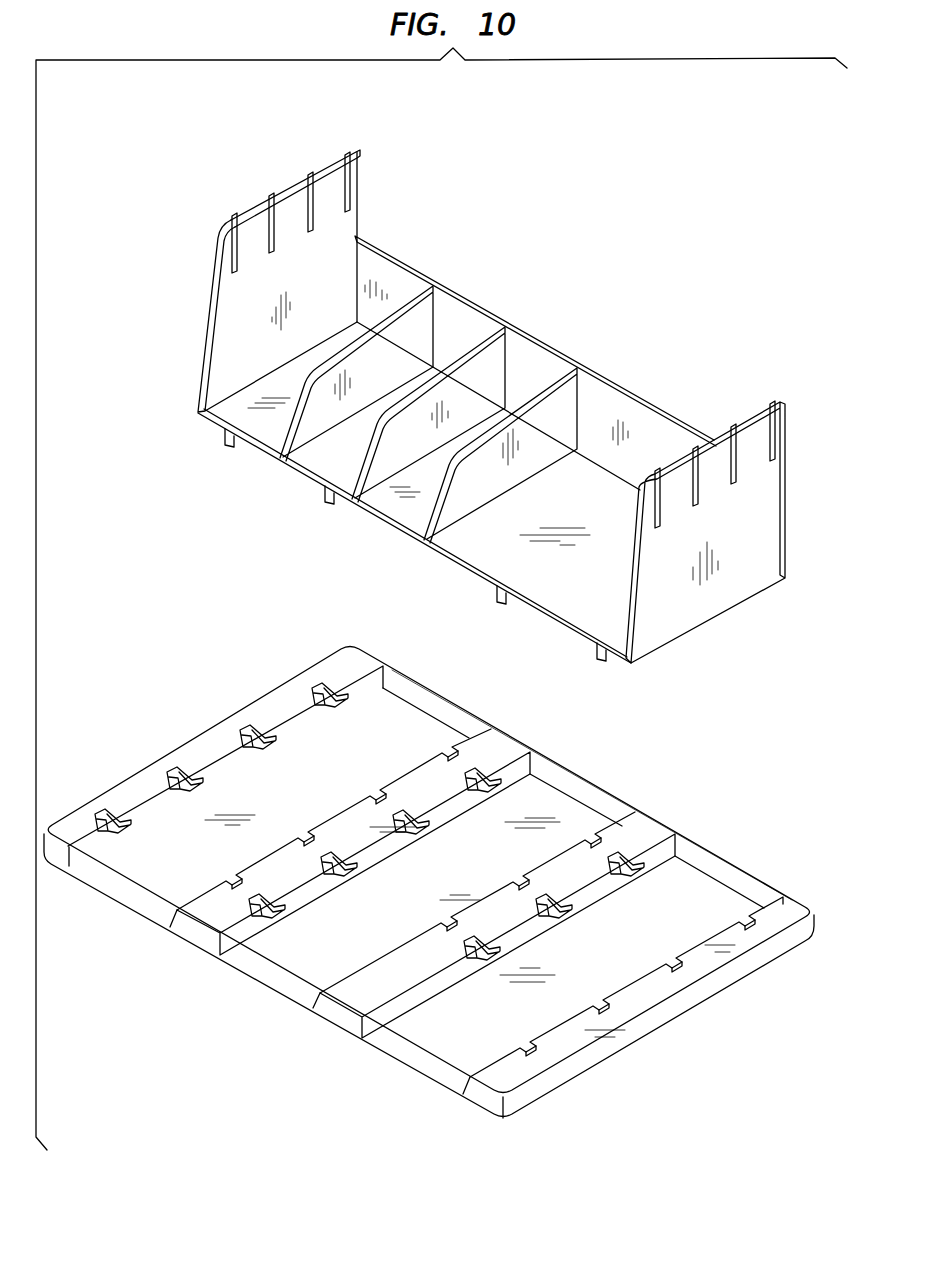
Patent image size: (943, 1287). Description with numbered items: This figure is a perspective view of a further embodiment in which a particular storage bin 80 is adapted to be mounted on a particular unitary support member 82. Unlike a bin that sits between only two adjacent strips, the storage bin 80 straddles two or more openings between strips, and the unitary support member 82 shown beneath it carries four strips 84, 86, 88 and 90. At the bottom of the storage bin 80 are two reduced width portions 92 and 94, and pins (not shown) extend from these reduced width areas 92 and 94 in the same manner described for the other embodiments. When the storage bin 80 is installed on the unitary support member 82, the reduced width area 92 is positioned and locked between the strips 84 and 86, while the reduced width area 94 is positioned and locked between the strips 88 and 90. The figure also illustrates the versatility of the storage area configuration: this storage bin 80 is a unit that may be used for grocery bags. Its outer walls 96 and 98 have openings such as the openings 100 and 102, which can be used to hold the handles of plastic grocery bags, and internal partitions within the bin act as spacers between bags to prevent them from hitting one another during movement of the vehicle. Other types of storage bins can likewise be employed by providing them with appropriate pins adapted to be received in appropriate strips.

The storage bin 80 is at (276, 149).
The unitary support member 82 is at (613, 762).
The strip 84 is at (208, 751).
The strip 86 is at (412, 785).
The strip 88 is at (530, 872).
The strip 90 is at (680, 960).
The reduced width portion 92 is at (277, 472).
The reduced width portion 94 is at (543, 624).
The outer wall 96 is at (206, 312).
The outer wall 98 is at (777, 517).
The opening 100 is at (231, 220).
The opening 102 is at (268, 196).